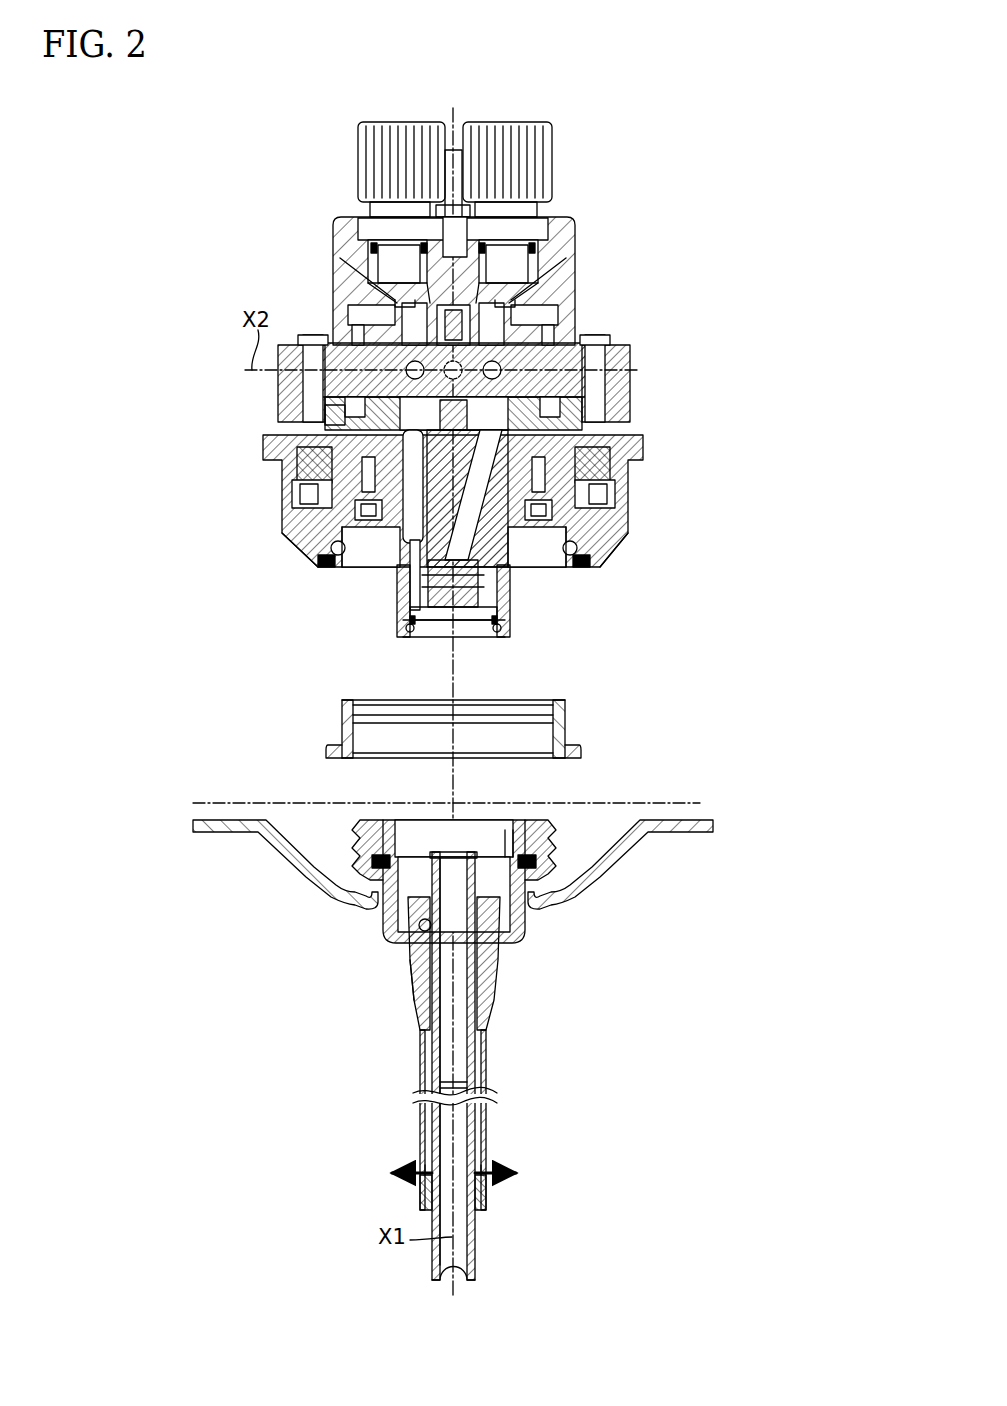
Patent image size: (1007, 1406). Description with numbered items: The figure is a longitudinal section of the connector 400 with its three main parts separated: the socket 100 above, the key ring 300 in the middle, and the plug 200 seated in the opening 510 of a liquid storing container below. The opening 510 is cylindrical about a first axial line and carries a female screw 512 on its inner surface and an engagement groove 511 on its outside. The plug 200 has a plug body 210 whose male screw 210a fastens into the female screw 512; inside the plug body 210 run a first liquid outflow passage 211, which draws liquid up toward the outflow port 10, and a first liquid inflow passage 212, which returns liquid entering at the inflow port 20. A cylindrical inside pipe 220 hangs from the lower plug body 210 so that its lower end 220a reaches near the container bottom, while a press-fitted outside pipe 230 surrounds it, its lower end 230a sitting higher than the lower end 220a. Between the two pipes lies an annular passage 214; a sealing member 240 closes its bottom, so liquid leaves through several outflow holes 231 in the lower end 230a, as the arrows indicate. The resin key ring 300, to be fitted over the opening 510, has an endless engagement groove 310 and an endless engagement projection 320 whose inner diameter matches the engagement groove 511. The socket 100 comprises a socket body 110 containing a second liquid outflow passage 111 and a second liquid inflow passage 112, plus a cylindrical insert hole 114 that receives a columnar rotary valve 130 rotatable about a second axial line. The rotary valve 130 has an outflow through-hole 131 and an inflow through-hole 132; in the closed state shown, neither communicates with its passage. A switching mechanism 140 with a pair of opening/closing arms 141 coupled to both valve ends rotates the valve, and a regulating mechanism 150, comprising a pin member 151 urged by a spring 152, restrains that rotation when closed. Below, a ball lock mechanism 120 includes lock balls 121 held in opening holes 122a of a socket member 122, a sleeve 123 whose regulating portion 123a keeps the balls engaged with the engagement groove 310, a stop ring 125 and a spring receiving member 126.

The connector 400 is at (203, 133).
The outflow port 10 is at (552, 160).
The inflow port 20 is at (358, 160).
The socket 100 is at (760, 232).
The socket body 110 is at (575, 290).
The second liquid outflow passage 111 is at (505, 325).
The second liquid inflow passage 112 is at (405, 322).
The insert hole 114 is at (300, 380).
The ball lock mechanism 120 is at (452, 522).
The lock balls 121 is at (350, 567).
The socket member 122 is at (572, 560).
The opening holes 122a is at (585, 537).
The sleeve 123 is at (300, 545).
The regulating portion 123a is at (331, 552).
The stop ring 125 is at (325, 570).
The spring receiving member 126 is at (612, 498).
The rotary valve 130 is at (510, 386).
The outflow through-hole 131 is at (501, 370).
The inflow through-hole 132 is at (406, 370).
The switching mechanism 140 is at (478, 366).
The opening/closing arms 141 is at (630, 358).
The regulating mechanism 150 is at (237, 488).
The pin member 151 is at (300, 470).
The spring 152 is at (300, 500).
The plug 200 is at (512, 1055).
The plug body 210 is at (522, 930).
The male screw 210a is at (545, 838).
The first liquid outflow passage 211 is at (450, 1048).
The first liquid inflow passage 212 is at (424, 1000).
The annular passage 214 is at (432, 1083).
The inside pipe 220 is at (471, 1066).
The lower end of inside pipe 220a is at (475, 1258).
The outside pipe 230 is at (462, 1121).
The lower end of outside pipe 230a is at (420, 1195).
The outflow holes 231 is at (422, 1166).
The sealing member 240 is at (498, 1186).
The key ring 300 is at (490, 708).
The engagement groove 310 is at (565, 722).
The engagement projection 320 is at (365, 712).
The opening 510 is at (427, 866).
The engagement groove 511 is at (560, 838).
The female screw 512 is at (383, 838).